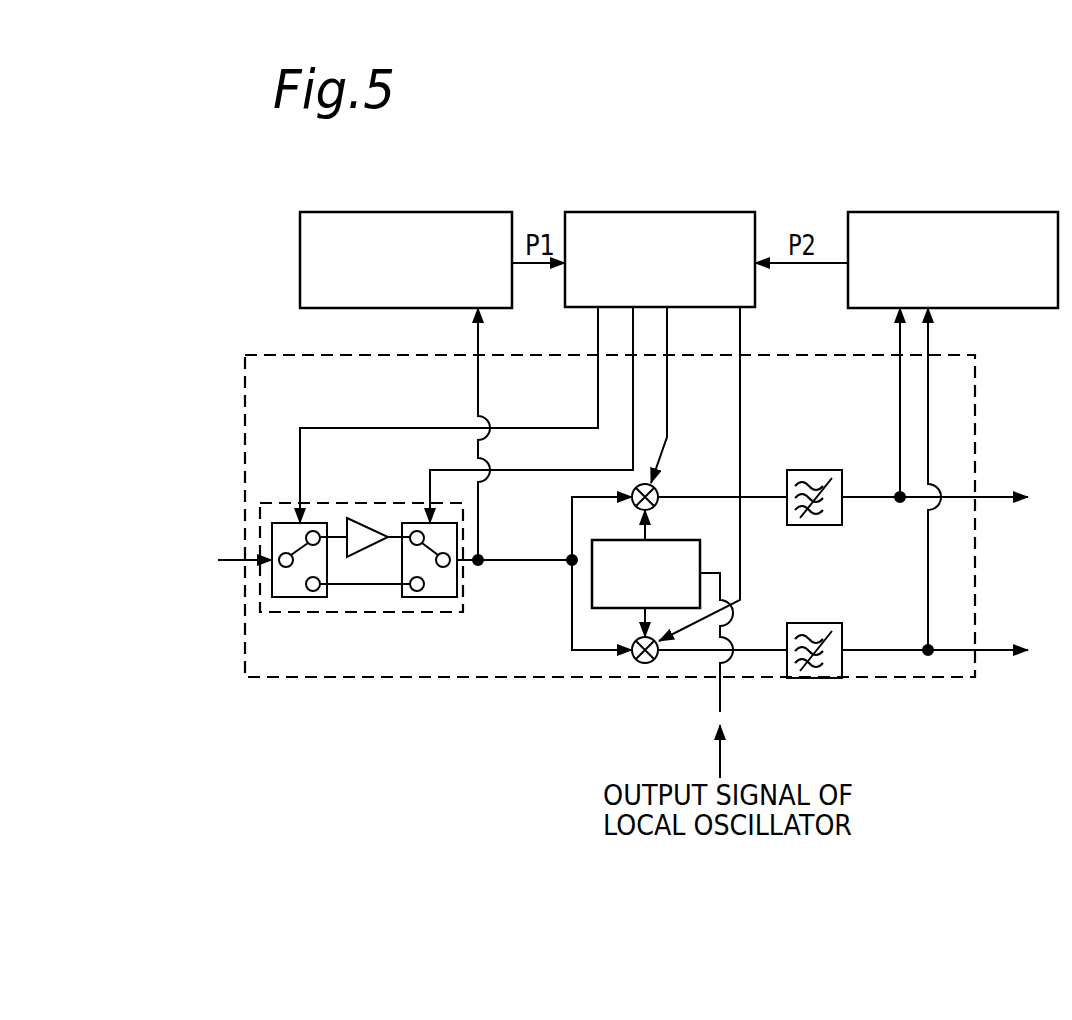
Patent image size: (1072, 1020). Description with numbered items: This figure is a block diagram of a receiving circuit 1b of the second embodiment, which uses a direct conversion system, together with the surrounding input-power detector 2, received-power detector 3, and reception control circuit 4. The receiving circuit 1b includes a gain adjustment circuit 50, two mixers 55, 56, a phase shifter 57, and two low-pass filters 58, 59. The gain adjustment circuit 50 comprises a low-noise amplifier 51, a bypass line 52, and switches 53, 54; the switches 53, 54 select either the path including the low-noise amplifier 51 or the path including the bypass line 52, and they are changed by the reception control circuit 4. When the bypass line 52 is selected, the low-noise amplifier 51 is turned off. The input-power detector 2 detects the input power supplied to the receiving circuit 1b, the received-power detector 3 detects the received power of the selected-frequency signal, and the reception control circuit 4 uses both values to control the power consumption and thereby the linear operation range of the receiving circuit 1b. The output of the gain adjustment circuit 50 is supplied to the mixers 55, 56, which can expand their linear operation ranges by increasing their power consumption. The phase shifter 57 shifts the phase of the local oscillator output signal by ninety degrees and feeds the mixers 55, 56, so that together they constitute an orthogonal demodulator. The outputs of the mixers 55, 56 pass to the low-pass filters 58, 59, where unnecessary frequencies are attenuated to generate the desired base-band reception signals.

The receiving circuit 1b is at (305, 690).
The input-power detector 2 is at (410, 212).
The received-power detector 3 is at (957, 212).
The reception control circuit 4 is at (703, 212).
The gain adjustment circuit 50 is at (268, 503).
The low-noise amplifier 51 is at (370, 520).
The bypass line 52 is at (367, 584).
The switch 53 is at (298, 597).
The switch 54 is at (430, 597).
The mixer 55 is at (655, 488).
The mixer 56 is at (640, 663).
The phase shifter 57 is at (662, 535).
The low-pass filter 58 is at (828, 470).
The low-pass filter 59 is at (828, 623).